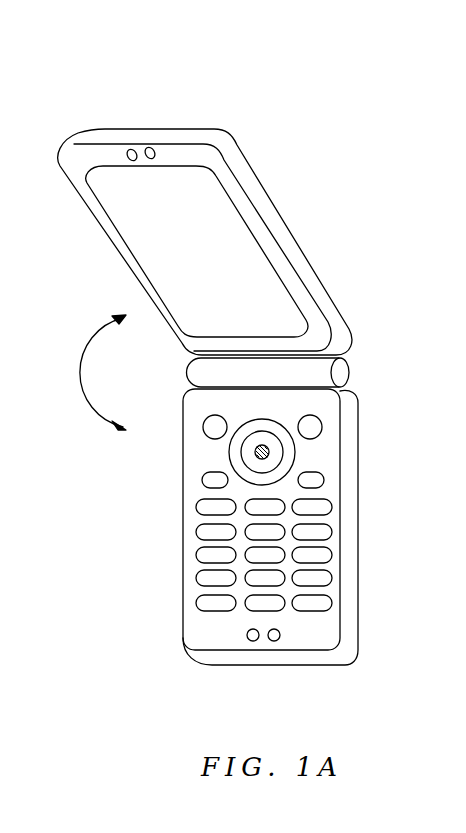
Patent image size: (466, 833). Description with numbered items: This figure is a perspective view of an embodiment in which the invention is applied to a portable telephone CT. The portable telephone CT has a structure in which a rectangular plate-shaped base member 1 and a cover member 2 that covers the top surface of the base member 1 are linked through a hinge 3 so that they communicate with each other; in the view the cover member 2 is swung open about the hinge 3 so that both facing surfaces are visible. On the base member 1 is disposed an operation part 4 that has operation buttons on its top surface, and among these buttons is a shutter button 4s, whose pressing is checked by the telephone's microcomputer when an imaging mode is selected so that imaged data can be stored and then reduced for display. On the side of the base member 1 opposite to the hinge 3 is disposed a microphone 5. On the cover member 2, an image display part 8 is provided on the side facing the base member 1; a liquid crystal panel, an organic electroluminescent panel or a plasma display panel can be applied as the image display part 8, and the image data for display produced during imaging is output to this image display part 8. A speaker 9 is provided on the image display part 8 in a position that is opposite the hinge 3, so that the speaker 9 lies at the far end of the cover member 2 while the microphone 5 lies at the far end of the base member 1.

The portable telephone CT is at (243, 101).
The base member 1 is at (183, 527).
The cover member 2 is at (118, 255).
The hinge 3 is at (188, 372).
The operation part 4 is at (334, 507).
The shutter button 4s is at (271, 451).
The microphone 5 is at (275, 642).
The image display part 8 is at (236, 255).
The speaker 9 is at (138, 147).